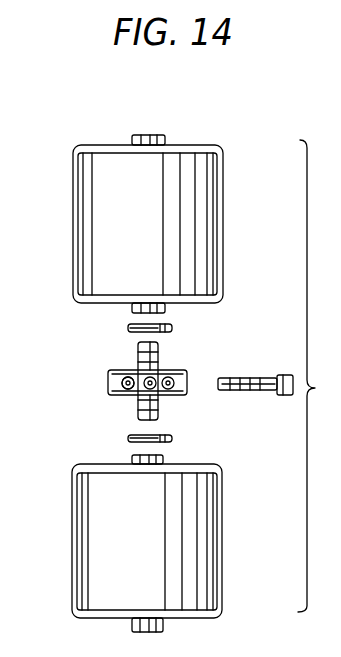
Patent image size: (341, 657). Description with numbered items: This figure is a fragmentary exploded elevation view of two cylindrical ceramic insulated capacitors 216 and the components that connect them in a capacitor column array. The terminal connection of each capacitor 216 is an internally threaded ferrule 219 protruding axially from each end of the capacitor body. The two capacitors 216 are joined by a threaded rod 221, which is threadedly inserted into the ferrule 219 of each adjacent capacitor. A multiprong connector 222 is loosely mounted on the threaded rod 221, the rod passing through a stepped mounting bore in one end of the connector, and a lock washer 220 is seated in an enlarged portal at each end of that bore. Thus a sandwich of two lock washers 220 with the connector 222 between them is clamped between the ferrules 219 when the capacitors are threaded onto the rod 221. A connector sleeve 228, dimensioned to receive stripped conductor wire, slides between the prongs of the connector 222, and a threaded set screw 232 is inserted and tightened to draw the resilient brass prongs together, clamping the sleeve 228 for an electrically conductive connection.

The ceramic insulated capacitor 216 is at (88, 201).
The internally threaded ferrule 219 is at (110, 313).
The lock washer 220 is at (172, 328).
The threaded rod 221 is at (138, 348).
The multiprong connector 222 is at (108, 380).
The connector sleeve 228 is at (124, 387).
The threaded set screw 232 is at (252, 376).